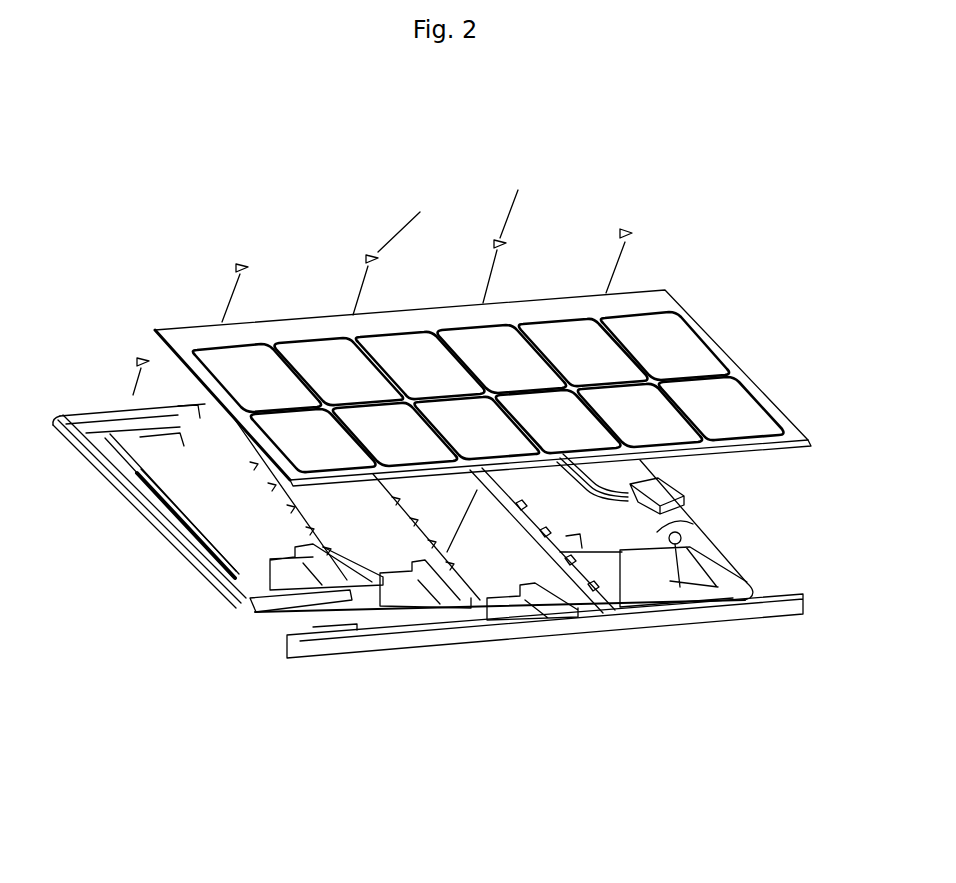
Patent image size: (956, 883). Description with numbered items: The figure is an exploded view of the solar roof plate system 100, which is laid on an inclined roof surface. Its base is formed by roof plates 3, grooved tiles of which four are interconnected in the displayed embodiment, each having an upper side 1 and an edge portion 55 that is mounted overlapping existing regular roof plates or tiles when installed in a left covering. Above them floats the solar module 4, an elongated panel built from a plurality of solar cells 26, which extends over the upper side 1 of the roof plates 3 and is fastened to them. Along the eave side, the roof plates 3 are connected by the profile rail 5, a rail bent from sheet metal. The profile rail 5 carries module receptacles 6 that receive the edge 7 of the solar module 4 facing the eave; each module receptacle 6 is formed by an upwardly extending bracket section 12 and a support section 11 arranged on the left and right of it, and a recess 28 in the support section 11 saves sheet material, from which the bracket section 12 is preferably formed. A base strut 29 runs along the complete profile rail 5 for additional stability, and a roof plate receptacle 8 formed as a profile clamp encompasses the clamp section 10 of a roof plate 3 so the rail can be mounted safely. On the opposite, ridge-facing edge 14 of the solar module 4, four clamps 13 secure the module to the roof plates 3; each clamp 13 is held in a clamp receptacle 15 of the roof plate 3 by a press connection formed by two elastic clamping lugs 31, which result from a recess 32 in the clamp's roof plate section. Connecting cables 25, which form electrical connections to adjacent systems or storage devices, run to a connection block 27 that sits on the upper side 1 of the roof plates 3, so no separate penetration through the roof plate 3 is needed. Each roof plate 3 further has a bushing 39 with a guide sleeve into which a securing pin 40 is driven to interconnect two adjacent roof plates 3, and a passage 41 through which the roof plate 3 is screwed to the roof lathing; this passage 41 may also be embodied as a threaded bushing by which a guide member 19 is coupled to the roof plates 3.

The solar roof plate system 100 is at (421, 834).
The upper side 1 is at (215, 498).
The roof plate 3 is at (385, 630).
The solar module 4 is at (293, 330).
The profile rail 5 is at (795, 620).
The module receptacle 6 is at (462, 620).
The edge (facing the profile rail) 7 is at (718, 462).
The roof plate receptacle 8 is at (445, 618).
The clamp section 10 is at (273, 600).
The support section 11 is at (500, 622).
The bracket section 12 is at (478, 620).
The clamp 13 is at (246, 262).
The edge (remote from the profile rail) 14 is at (574, 297).
The clamp receptacle 15 is at (128, 432).
The guide member 19 is at (138, 357).
The connecting cables 25 is at (117, 425).
The solar cells 26 is at (667, 340).
The connection block 27 is at (662, 493).
The recess 28 is at (340, 637).
The base strut 29 is at (660, 628).
The clamping lug 31 is at (628, 235).
The recess 32 is at (632, 228).
The bushing 39 is at (250, 598).
The securing pin 40 is at (623, 592).
The passage 41 is at (117, 425).
The edge portion 55 is at (215, 572).